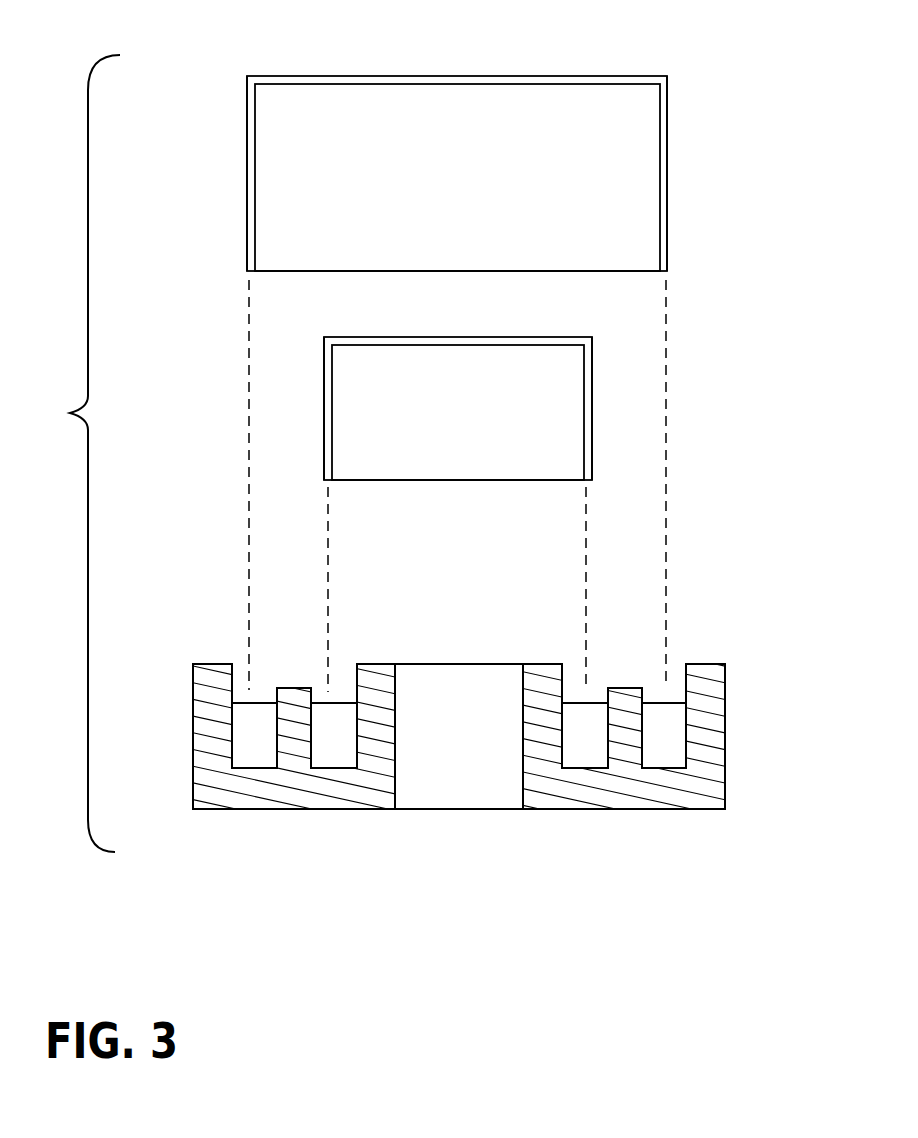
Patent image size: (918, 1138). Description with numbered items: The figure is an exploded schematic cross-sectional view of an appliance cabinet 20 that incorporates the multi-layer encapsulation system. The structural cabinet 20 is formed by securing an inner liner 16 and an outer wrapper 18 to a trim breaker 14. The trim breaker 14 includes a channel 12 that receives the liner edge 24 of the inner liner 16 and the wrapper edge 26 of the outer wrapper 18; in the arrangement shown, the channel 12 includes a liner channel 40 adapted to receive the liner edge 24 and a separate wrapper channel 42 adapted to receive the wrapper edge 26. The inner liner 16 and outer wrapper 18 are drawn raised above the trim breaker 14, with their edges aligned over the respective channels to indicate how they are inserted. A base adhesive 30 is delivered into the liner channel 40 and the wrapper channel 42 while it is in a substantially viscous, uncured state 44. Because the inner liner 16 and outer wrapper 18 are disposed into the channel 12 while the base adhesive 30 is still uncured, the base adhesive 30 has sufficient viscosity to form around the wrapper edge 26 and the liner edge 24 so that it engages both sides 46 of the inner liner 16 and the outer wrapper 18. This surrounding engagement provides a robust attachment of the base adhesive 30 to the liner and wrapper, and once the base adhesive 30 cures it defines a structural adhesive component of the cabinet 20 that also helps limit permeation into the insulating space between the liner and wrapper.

The channel 12 is at (223, 637).
The trim breaker 14 is at (610, 813).
The inner liner 16 is at (478, 377).
The outer wrapper 18 is at (487, 115).
The structural cabinet 20 is at (76, 453).
The liner edge 24 is at (592, 480).
The wrapper edge 26 is at (667, 272).
The base adhesive 30 is at (667, 740).
The liner channel 40 is at (340, 683).
The wrapper channel 42 is at (675, 673).
The uncured state 44 is at (255, 770).
The both sides 46 is at (247, 240).